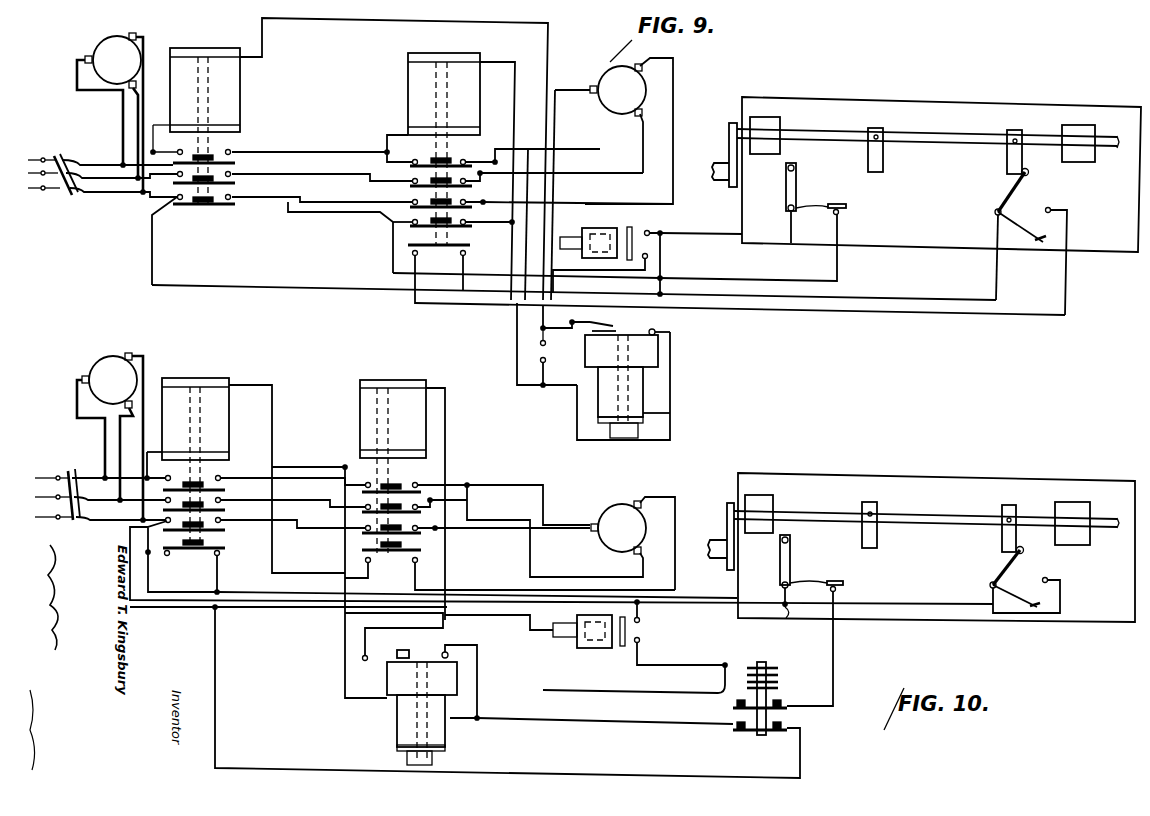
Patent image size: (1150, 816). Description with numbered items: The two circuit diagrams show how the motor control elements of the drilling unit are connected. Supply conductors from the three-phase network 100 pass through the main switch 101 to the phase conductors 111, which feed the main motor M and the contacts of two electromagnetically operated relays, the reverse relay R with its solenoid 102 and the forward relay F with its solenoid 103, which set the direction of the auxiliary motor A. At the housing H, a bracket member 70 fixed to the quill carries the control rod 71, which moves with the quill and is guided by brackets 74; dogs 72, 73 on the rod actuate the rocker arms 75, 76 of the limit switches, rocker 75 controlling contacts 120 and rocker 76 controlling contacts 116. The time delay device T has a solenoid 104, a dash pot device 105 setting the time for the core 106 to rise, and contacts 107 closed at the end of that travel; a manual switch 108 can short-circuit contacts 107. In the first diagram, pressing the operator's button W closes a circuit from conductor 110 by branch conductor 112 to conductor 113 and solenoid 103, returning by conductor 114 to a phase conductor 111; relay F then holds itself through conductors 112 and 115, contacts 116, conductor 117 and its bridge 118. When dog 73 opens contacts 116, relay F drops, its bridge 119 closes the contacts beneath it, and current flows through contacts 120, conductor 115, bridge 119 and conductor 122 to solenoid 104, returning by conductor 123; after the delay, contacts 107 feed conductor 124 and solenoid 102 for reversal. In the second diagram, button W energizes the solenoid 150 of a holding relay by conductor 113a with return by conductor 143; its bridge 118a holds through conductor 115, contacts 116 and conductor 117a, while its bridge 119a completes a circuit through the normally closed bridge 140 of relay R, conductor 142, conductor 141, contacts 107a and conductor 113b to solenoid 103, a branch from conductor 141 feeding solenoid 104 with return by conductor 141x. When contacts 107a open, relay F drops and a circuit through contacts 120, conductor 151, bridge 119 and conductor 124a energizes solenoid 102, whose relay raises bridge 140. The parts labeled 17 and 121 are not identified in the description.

In FIG. 9, the drive shaft stub 17 is at (712, 166).
In FIG. 9, the bracket member 70 is at (729, 140).
In FIG. 10, the bracket member 70 is at (727, 528).
In FIG. 9, the control rod 71 is at (930, 134).
In FIG. 10, the control rod 71 is at (843, 512).
In FIG. 9, the dog 72 is at (1003, 154).
In FIG. 10, the dog 72 is at (1003, 506).
In FIG. 9, the dog 73 is at (883, 155).
In FIG. 10, the dog 73 is at (877, 536).
In FIG. 9, the bracket 74 is at (778, 121).
In FIG. 10, the bracket 74 is at (776, 500).
In FIG. 9, the rocker arm 75 is at (1022, 192).
In FIG. 10, the rocker arm 75 is at (1000, 565).
In FIG. 9, the rocker arm 76 is at (796, 185).
In FIG. 10, the rocker arm 76 is at (792, 562).
In FIG. 9, the three phase network 100 is at (42, 158).
In FIG. 10, the three phase network 100 is at (48, 476).
In FIG. 9, the main switch 101 is at (60, 200).
In FIG. 10, the main switch 101 is at (80, 478).
In FIG. 9, the solenoid 102 is at (233, 93).
In FIG. 10, the solenoid 102 is at (222, 420).
In FIG. 9, the solenoid 103 is at (407, 90).
In FIG. 10, the solenoid 103 is at (360, 408).
In FIG. 9, the solenoid 104 is at (645, 400).
In FIG. 10, the solenoid 104 is at (397, 720).
In FIG. 9, the dash pot device 105 is at (660, 350).
In FIG. 10, the dash pot device 105 is at (387, 679).
In FIG. 9, the core 106 is at (608, 380).
In FIG. 10, the core 106 is at (462, 717).
In FIG. 9, the contacts 107 is at (612, 326).
In FIG. 10, the contacts 107a is at (401, 650).
In FIG. 9, the manually operable switch 108 is at (566, 345).
In FIG. 9, the conductor 110 is at (282, 288).
In FIG. 10, the conductor 110 is at (148, 569).
In FIG. 9, the phase conductors 111 is at (104, 198).
In FIG. 10, the phase conductors 111 is at (307, 480).
In FIG. 9, the branch conductor 112 is at (662, 252).
In FIG. 9, the conductor 113 is at (505, 246).
In FIG. 10, the conductor 113a is at (674, 665).
In FIG. 10, the conductor 113b is at (447, 571).
In FIG. 9, the conductor 114 is at (386, 135).
In FIG. 9, the conductor 115 is at (722, 228).
In FIG. 10, the conductor 115 is at (800, 625).
In FIG. 9, the contacts 116 is at (846, 212).
In FIG. 10, the contacts 116 is at (846, 584).
In FIG. 9, the conductor 117 is at (788, 281).
In FIG. 10, the conductor 117 is at (716, 558).
In FIG. 10, the conductor 117a is at (836, 658).
In FIG. 9, the bridge 118 is at (398, 228).
In FIG. 10, the bridge 118a is at (790, 709).
In FIG. 9, the bridge 119 is at (430, 247).
In FIG. 10, the bridge 119 is at (394, 556).
In FIG. 10, the bridge 119a is at (753, 733).
In FIG. 9, the contacts 120 is at (1032, 262).
In FIG. 10, the contacts 120 is at (1026, 592).
In FIG. 9, the conductor 121 is at (840, 313).
In FIG. 9, the conductor 122 is at (516, 345).
In FIG. 9, the conductor 123 is at (560, 386).
In FIG. 9, the conductor 124 is at (548, 214).
In FIG. 10, the conductor 124a is at (276, 540).
In FIG. 10, the bridge 140 is at (201, 556).
In FIG. 10, the conductor 141 is at (608, 725).
In FIG. 10, the conductor 141x is at (397, 648).
In FIG. 10, the conductor 142 is at (216, 668).
In FIG. 10, the conductor 143 is at (660, 692).
In FIG. 10, the solenoid 150 is at (780, 677).
In FIG. 10, the conductor 151 is at (924, 603).
In FIG. 9, the motor M is at (107, 37).
In FIG. 10, the motor M is at (106, 358).
In FIG. 9, the reverse relay R is at (182, 49).
In FIG. 10, the reverse relay R is at (187, 450).
In FIG. 9, the forward relay F is at (444, 138).
In FIG. 10, the forward relay F is at (349, 455).
In FIG. 9, the auxiliary motor A is at (616, 112).
In FIG. 10, the auxiliary motor A is at (615, 510).
In FIG. 9, the housing H is at (1000, 104).
In FIG. 10, the housing H is at (910, 478).
In FIG. 9, the operator's button W is at (604, 227).
In FIG. 10, the operator's button W is at (596, 643).
In FIG. 9, the time delay device T is at (660, 373).